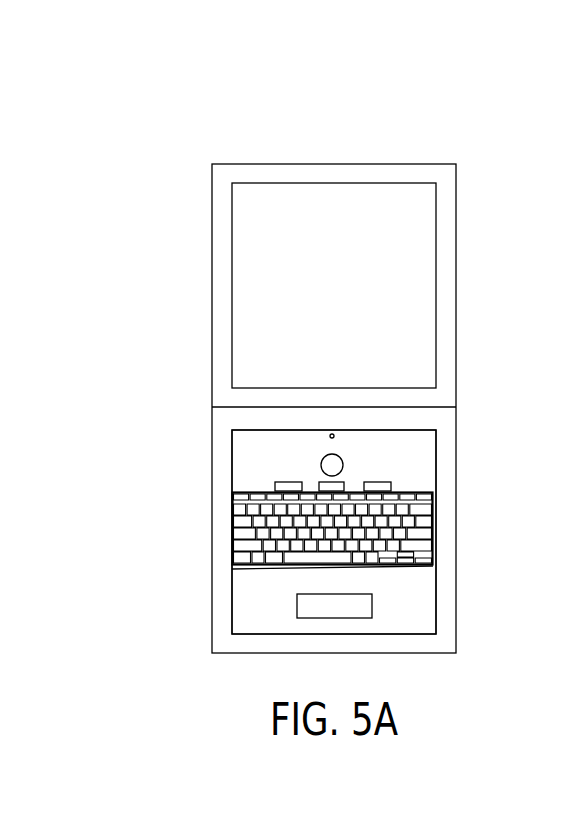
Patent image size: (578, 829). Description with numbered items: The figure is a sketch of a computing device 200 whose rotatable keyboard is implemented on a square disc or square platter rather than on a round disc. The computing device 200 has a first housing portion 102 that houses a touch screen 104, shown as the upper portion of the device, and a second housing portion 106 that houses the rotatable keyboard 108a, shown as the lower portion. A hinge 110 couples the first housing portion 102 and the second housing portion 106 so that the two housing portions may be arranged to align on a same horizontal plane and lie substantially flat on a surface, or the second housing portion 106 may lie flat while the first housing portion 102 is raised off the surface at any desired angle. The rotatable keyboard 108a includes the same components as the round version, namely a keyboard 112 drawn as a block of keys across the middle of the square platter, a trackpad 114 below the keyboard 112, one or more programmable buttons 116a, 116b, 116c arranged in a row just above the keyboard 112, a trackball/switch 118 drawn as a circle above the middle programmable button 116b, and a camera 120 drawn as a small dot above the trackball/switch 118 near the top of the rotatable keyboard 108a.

The computing device 200 is at (272, 96).
The first housing portion 102 is at (222, 202).
The touch screen 104 is at (250, 290).
The hinge 110 is at (218, 406).
The second housing portion 106 is at (245, 430).
The rotatable keyboard 108a is at (250, 450).
The camera 120 is at (332, 433).
The trackball/switch 118 is at (337, 463).
The programmable button 116a is at (290, 487).
The programmable button 116b is at (340, 487).
The programmable button 116c is at (388, 486).
The keyboard 112 is at (434, 516).
The trackpad 114 is at (365, 605).